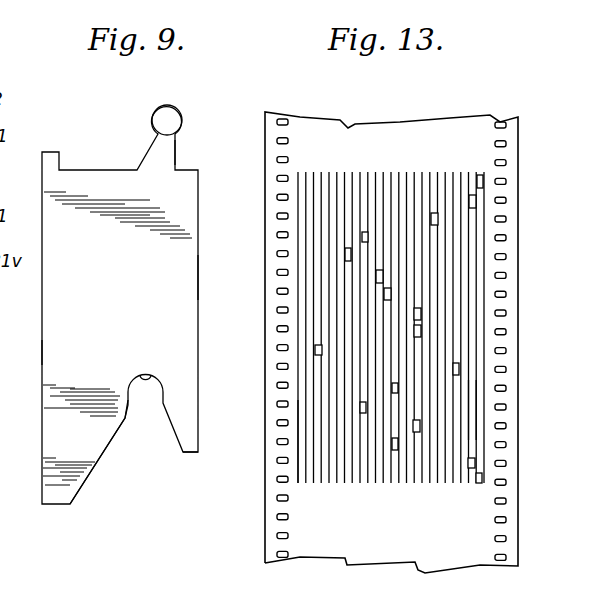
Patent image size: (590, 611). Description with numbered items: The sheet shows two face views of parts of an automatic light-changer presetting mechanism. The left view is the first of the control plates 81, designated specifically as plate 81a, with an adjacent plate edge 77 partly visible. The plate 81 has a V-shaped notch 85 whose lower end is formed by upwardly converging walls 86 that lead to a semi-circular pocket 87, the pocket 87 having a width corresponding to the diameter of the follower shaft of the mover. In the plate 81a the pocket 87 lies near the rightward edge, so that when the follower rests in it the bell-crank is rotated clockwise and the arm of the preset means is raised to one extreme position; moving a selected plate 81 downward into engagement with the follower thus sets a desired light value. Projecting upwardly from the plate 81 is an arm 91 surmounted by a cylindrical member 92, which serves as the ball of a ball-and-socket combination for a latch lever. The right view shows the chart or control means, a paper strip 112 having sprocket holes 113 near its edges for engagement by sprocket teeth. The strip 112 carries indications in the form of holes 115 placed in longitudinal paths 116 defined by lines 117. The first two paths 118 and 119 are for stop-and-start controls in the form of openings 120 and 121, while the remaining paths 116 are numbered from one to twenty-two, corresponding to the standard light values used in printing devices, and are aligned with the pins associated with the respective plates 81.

In FIG. 9, the cam plate 77 is at (36, 357).
In FIG. 9, the control plate 81 is at (180, 228).
In FIG. 9, the first control plate 81a is at (177, 279).
In FIG. 9, the V-shaped notch 85 is at (181, 449).
In FIG. 9, the upwardly converging walls 86 is at (170, 428).
In FIG. 9, the semi-circular pocket 87 is at (145, 376).
In FIG. 9, the arm 91 is at (165, 148).
In FIG. 9, the cylindrical member 92 is at (172, 112).
In FIG. 13, the paper strip 112 is at (470, 130).
In FIG. 13, the sprocket holes 113 is at (505, 268).
In FIG. 13, the holes 115 is at (315, 350).
In FIG. 13, the longitudinal paths 116 is at (317, 438).
In FIG. 13, the lines 117 is at (297, 465).
In FIG. 13, the first path 118 is at (478, 403).
In FIG. 13, the second path 119 is at (468, 370).
In FIG. 13, the opening 120 is at (480, 473).
In FIG. 13, the opening 121 is at (472, 458).